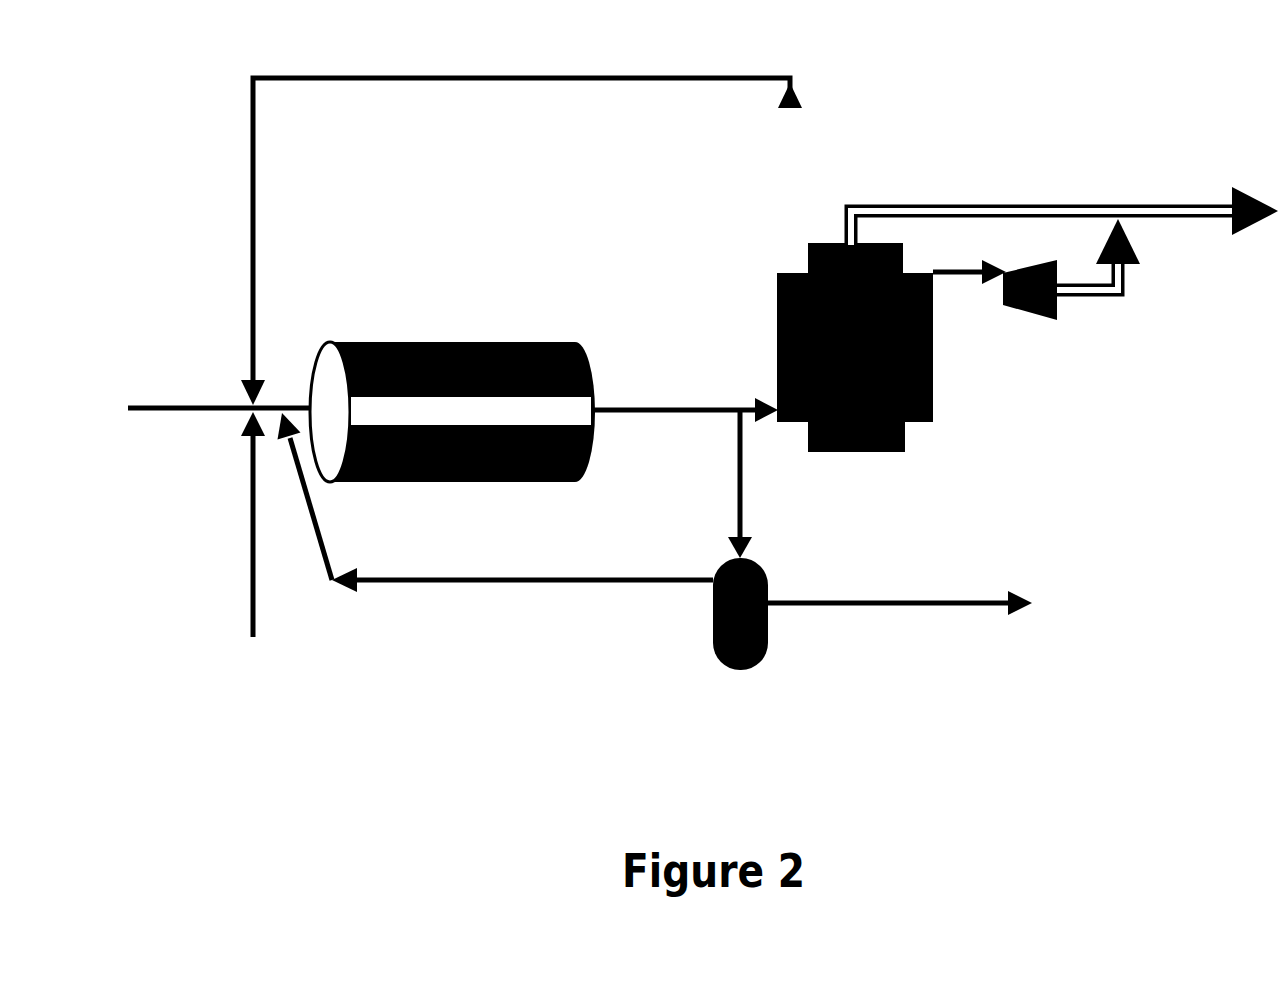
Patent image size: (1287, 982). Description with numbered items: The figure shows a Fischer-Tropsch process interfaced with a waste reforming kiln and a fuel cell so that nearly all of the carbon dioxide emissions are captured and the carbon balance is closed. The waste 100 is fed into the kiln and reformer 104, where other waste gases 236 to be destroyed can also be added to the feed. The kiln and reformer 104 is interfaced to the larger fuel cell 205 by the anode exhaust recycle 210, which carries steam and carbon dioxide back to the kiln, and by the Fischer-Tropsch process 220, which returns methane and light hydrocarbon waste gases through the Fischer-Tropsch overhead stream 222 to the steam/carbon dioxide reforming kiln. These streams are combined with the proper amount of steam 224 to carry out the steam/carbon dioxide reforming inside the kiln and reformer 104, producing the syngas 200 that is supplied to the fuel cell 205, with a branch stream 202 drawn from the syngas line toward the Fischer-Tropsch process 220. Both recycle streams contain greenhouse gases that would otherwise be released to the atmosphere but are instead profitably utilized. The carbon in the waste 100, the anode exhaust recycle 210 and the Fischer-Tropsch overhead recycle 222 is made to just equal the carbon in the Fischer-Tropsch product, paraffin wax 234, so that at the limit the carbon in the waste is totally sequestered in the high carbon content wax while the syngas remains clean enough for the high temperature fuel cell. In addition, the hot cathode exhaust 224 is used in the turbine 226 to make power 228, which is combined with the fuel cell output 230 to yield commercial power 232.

The waste 100 is at (202, 405).
The kiln and reformer 104 is at (433, 372).
The syngas 200 is at (677, 410).
The liquid product stream 202 is at (740, 470).
The fuel cell 205 is at (905, 450).
The anode exhaust recycle 210 is at (490, 80).
The Fischer-Tropsch process 220 is at (710, 620).
The Fischer-Tropsch overhead stream 222 is at (470, 580).
The hot cathode exhaust 224 is at (955, 277).
The turbine 226 is at (1057, 315).
The power 228 is at (1125, 282).
The fuel cell output 230 is at (977, 206).
The commercial power 232 is at (1172, 205).
The paraffin wax 234 is at (898, 606).
The other waste gases 236 is at (250, 552).